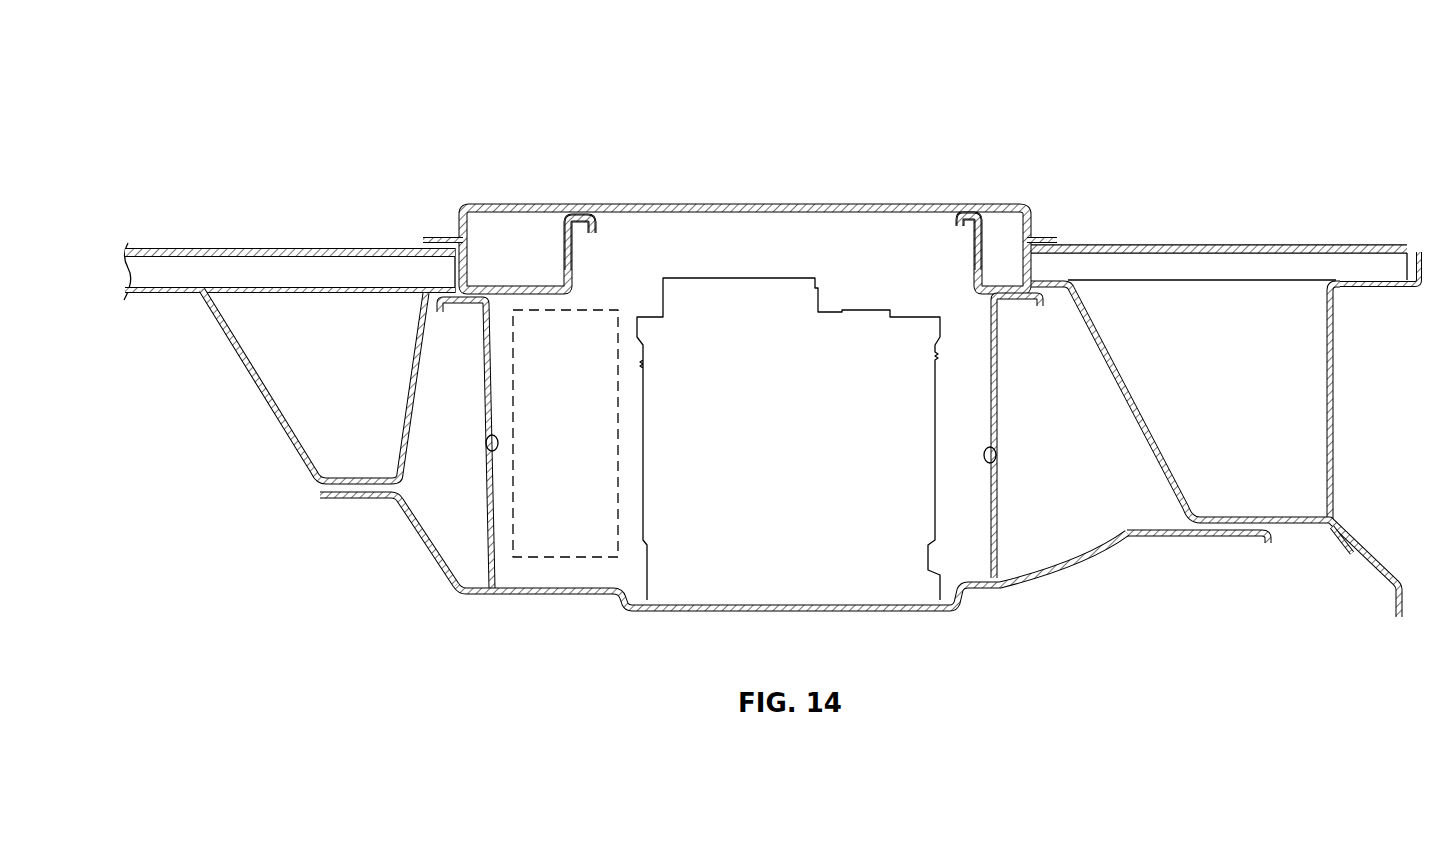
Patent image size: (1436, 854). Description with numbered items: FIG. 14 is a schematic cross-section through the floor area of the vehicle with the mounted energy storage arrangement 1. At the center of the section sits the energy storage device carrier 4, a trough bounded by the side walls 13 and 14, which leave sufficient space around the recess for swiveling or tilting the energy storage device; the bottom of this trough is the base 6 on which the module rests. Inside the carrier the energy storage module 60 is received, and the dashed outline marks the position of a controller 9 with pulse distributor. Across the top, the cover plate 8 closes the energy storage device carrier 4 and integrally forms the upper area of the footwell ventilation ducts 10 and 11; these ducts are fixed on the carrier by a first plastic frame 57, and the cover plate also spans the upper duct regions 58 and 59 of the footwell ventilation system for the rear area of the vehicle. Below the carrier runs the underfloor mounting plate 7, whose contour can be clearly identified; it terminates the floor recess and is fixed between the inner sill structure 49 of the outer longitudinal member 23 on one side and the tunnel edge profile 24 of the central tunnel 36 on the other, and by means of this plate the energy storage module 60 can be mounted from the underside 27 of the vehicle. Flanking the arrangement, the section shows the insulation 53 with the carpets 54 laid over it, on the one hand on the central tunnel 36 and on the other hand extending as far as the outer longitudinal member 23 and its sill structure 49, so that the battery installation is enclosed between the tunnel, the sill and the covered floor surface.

The energy storage arrangement 1 is at (260, 118).
The energy storage device carrier 4 is at (1008, 403).
The bottom plate 6 is at (792, 590).
The underfloor mounting plate 7 is at (444, 576).
The cover plate 8 is at (860, 205).
The controller 9 is at (602, 540).
The footwell ventilation duct 10 is at (525, 240).
The footwell ventilation duct 11 is at (995, 222).
The side wall 13 is at (1000, 458).
The side wall 14 is at (489, 444).
The outer longitudinal member 23 is at (1336, 452).
The tunnel edge profile 24 is at (410, 382).
The underside 27 is at (415, 535).
The central tunnel 36 is at (270, 370).
The sill structure 49 is at (1336, 358).
The insulation 53 is at (152, 263).
The carpets 54 is at (276, 252).
The first plastic frame 57 is at (578, 270).
The upper duct region 58 is at (461, 223).
The upper duct region 59 is at (1026, 223).
The energy storage module 60 is at (740, 258).